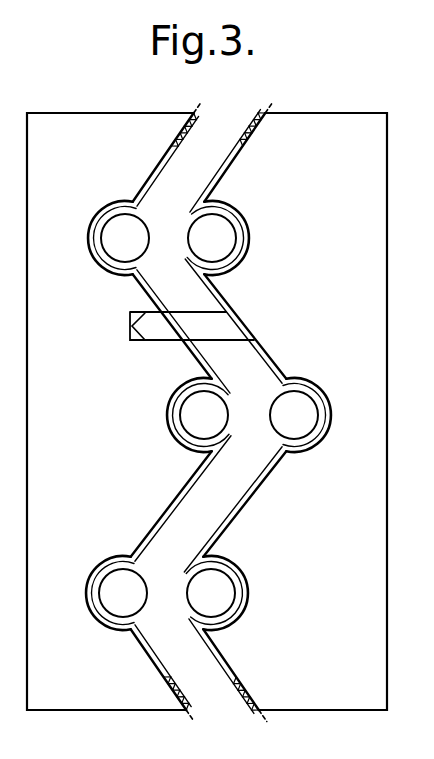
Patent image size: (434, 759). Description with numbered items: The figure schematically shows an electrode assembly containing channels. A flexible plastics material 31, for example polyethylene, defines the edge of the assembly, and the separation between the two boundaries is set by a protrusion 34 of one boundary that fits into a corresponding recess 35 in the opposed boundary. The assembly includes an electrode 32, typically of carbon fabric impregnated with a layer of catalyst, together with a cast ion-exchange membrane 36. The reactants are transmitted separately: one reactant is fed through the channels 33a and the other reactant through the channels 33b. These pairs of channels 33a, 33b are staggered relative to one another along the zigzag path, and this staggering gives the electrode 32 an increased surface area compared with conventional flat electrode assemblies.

The flexible plastics material 31 is at (62, 167).
The electrode 32 is at (200, 126).
The channels 33a is at (107, 250).
The channels 33b is at (194, 250).
The protrusion 34 is at (220, 327).
The recess 35 is at (130, 319).
The cast ion-exchange membrane 36 is at (159, 295).